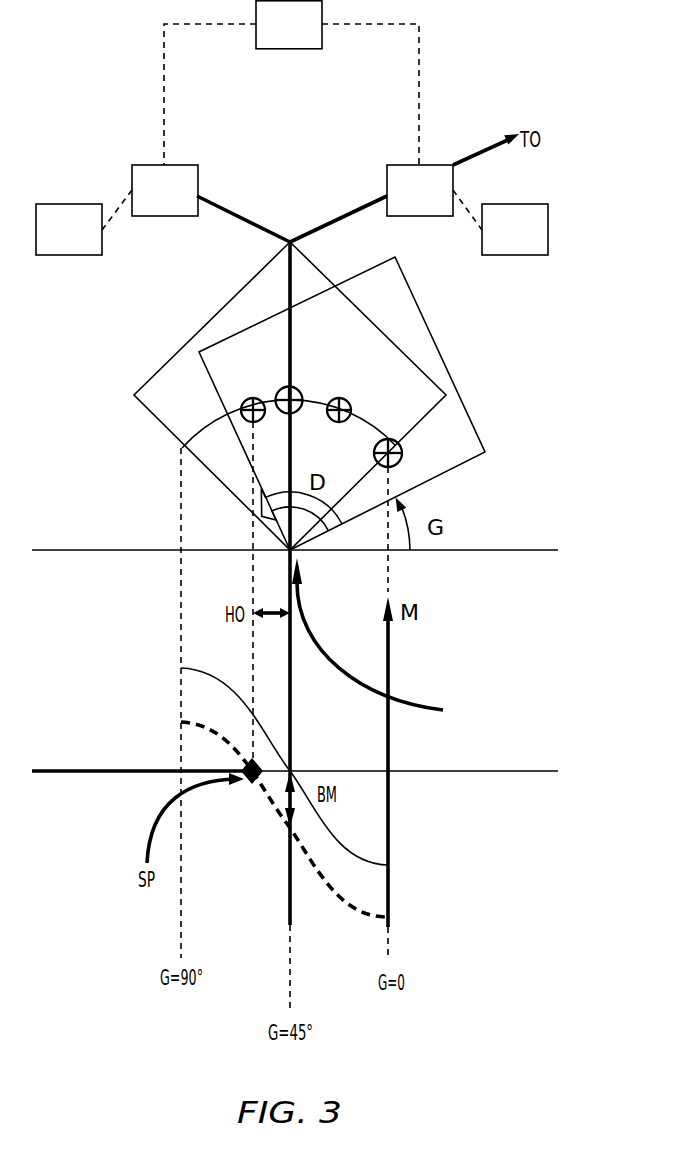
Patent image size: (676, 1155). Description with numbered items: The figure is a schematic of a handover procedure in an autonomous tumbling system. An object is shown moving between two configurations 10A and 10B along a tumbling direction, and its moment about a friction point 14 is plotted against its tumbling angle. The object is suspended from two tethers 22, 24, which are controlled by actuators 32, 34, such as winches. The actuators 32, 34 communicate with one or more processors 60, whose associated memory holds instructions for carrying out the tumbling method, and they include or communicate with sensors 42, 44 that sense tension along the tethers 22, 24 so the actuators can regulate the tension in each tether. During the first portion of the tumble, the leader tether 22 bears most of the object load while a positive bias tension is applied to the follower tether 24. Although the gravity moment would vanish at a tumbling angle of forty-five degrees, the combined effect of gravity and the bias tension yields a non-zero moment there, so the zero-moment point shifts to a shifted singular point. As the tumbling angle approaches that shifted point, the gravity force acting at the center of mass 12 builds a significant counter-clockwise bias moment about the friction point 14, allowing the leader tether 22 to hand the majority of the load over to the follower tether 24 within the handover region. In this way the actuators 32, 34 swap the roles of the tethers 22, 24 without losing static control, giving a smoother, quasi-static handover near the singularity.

The processor 60 is at (299, 37).
The actuator 32 is at (175, 202).
The actuator 34 is at (430, 202).
The sensor 42 is at (79, 241).
The sensor 44 is at (525, 241).
The leader tether 22 is at (210, 202).
The follower tether 24 is at (373, 200).
The first configuration of the object 10A is at (428, 352).
The second configuration of the object 10B is at (152, 388).
The center of mass 12 is at (402, 452).
The friction point 14 is at (380, 640).